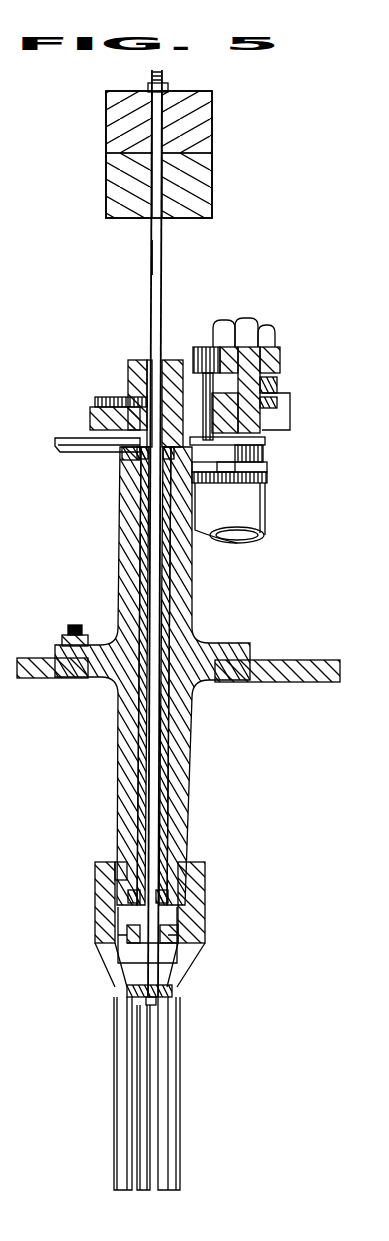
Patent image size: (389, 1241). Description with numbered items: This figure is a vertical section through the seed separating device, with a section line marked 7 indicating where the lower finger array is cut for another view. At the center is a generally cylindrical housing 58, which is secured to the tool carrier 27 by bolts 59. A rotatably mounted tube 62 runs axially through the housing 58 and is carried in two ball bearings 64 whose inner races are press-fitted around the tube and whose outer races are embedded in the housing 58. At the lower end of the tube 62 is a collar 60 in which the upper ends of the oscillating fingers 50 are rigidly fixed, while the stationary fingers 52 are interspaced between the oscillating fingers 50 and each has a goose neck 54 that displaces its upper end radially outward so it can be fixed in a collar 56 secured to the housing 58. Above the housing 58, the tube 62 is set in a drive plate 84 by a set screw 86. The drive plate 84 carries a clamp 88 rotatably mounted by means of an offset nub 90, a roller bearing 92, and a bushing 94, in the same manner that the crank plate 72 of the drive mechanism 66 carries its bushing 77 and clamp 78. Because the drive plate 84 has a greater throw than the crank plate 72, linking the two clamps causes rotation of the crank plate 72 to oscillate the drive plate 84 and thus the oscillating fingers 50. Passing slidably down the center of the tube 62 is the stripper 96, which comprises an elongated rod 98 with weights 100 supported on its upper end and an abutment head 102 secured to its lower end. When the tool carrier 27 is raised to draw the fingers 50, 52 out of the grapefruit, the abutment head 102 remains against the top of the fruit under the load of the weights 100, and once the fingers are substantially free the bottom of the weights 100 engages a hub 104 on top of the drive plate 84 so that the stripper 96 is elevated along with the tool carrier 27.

The weights 100 is at (214, 150).
The elongated rod 98 is at (163, 258).
The stripper 96 is at (145, 258).
The drive mechanism 66 is at (288, 327).
The bushing 77 is at (211, 346).
The clamp 78 is at (200, 362).
The bushing 94 is at (275, 348).
The clamp 88 is at (280, 355).
The offset nub 90 is at (277, 377).
The roller bearing 92 is at (277, 394).
The crank plate 72 is at (272, 418).
The hub 104 is at (130, 362).
The set screw 86 is at (120, 397).
The drive plate 84 is at (90, 418).
The ball bearings 64 is at (137, 455).
The bolts 59 is at (72, 632).
The tool carrier 27 is at (282, 661).
The housing 58 is at (184, 722).
The tube 62 is at (159, 786).
The collar 56 is at (200, 876).
The collar 60 is at (175, 932).
The oscillating fingers 50 is at (123, 936).
The goose neck 54 is at (113, 960).
The abutment head 102 is at (127, 984).
The stationary fingers 52 is at (120, 1065).
The section line 7- 7 is at (217, 1027).